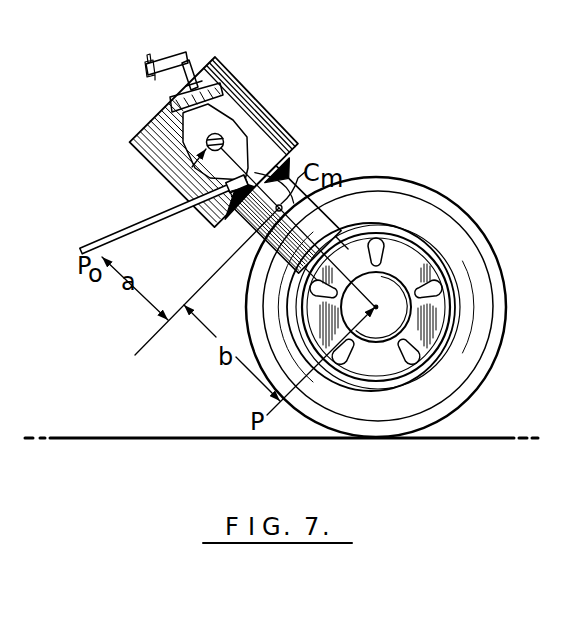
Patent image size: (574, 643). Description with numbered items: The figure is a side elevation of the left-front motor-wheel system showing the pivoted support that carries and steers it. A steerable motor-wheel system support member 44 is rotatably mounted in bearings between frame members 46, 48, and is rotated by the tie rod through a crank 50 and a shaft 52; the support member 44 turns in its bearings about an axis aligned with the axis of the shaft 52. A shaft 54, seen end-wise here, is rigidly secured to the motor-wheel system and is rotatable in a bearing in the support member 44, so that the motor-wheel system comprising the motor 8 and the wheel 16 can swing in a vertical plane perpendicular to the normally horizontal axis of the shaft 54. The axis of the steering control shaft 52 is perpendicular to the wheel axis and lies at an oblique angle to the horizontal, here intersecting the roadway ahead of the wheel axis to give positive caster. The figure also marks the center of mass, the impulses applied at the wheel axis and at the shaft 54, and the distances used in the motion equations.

The motor 8 is at (272, 132).
The wheel 16 is at (482, 328).
The steerable motor-wheel system support member 44 is at (233, 120).
The frame member 46 is at (145, 228).
The frame member 48 is at (219, 86).
The crank 50 is at (166, 58).
The shaft 52 is at (193, 64).
The shaft 54 is at (223, 141).